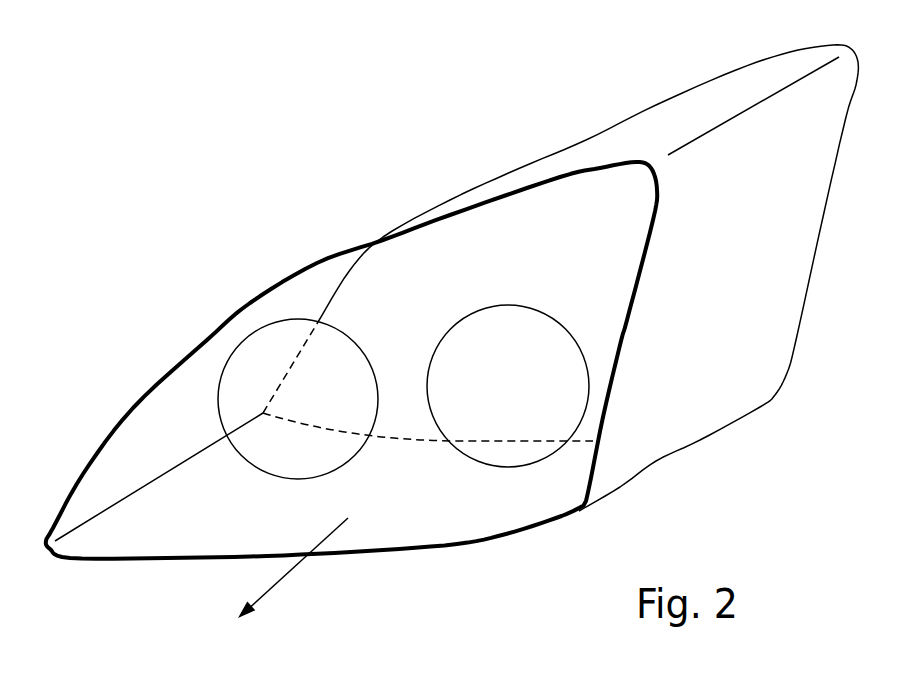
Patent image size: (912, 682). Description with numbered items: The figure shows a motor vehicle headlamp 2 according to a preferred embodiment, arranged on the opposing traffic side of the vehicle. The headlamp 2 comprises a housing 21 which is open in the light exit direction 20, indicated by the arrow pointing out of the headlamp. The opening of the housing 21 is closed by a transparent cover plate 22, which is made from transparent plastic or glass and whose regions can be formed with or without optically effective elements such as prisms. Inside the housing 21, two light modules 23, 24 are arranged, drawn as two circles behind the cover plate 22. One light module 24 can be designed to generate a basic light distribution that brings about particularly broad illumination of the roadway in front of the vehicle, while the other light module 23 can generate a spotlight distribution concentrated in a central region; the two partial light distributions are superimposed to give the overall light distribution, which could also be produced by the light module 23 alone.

The headlamp 2 is at (452, 361).
The light exit direction 20 is at (273, 588).
The housing 21 is at (586, 140).
The transparent cover plate 22 is at (509, 519).
The light module 23 is at (331, 408).
The light module 24 is at (530, 395).